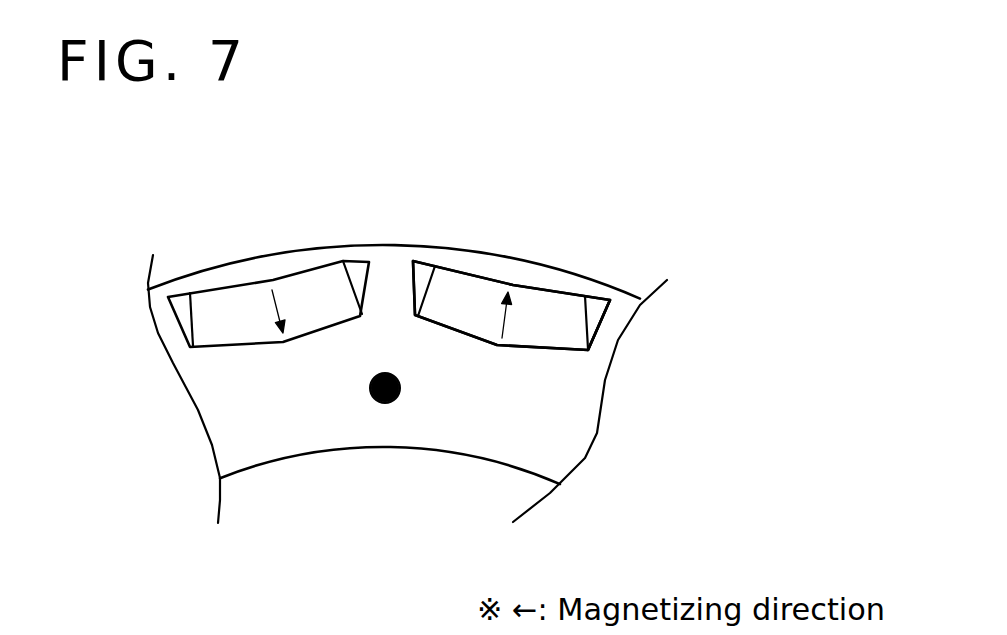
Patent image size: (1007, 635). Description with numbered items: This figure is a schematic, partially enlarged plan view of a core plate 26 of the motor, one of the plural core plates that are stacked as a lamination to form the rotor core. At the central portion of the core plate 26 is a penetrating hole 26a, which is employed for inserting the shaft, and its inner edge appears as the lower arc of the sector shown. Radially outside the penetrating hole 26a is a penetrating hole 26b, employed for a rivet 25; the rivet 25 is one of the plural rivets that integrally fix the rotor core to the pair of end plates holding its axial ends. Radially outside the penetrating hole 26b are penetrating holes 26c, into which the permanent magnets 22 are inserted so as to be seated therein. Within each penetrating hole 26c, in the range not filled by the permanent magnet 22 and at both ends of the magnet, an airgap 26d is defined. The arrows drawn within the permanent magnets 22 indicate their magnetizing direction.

The core plate 26 is at (394, 240).
The permanent magnet 22 is at (488, 303).
The penetrating hole 26c is at (609, 297).
The airgap 26d is at (593, 318).
The penetrating hole 26a is at (528, 465).
The penetrating hole 26b is at (370, 389).
The rivet 25 is at (388, 403).